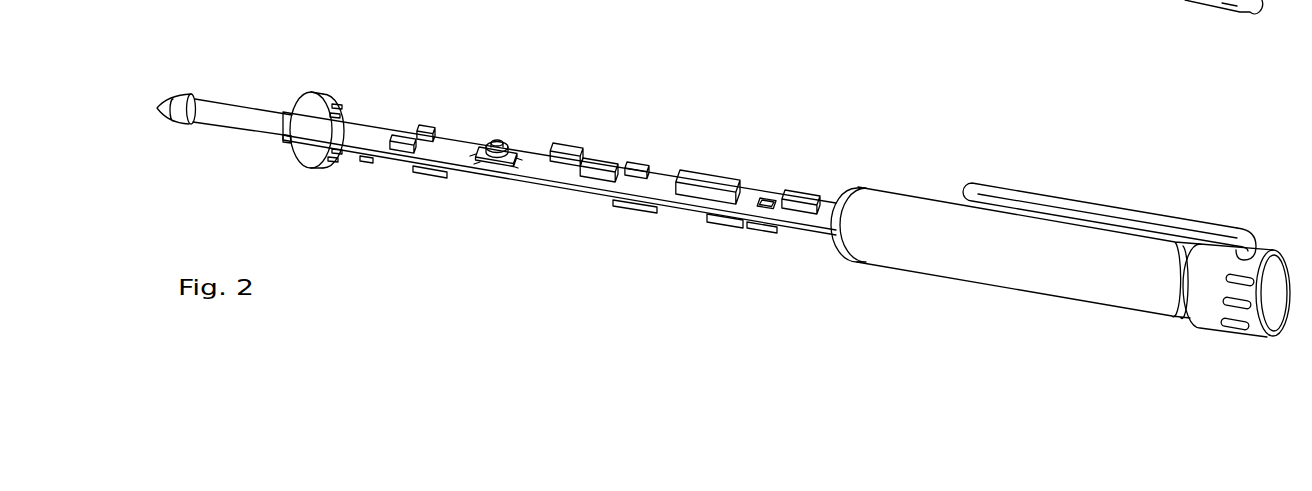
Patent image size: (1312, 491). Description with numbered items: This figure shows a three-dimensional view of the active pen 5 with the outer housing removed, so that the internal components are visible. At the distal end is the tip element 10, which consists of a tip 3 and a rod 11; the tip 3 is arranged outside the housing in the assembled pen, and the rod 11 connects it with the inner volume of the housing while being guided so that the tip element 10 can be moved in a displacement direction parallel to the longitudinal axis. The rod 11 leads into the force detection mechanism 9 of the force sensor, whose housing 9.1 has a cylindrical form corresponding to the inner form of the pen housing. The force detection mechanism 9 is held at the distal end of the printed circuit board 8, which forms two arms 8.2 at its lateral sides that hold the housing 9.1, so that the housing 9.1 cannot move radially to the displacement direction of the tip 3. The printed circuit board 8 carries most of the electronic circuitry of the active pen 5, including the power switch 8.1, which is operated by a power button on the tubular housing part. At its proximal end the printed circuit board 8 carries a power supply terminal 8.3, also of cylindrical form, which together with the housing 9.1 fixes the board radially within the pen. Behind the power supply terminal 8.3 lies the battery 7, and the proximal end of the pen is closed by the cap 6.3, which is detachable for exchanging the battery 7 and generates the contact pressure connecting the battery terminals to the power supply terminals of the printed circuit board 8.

The tip 3 is at (181, 106).
The rod 11 is at (243, 117).
The force detection mechanism 9 is at (323, 84).
The housing of the force detection mechanism 9.1 is at (318, 104).
The tip element 10 is at (219, 126).
The printed circuit board 8 is at (551, 170).
The power switch 8.1 is at (498, 143).
The arms 8.2 is at (287, 144).
The power supply terminal 8.3 is at (845, 198).
The active pen 5 is at (940, 110).
The battery 7 is at (985, 265).
The cap 6.3 is at (1256, 256).